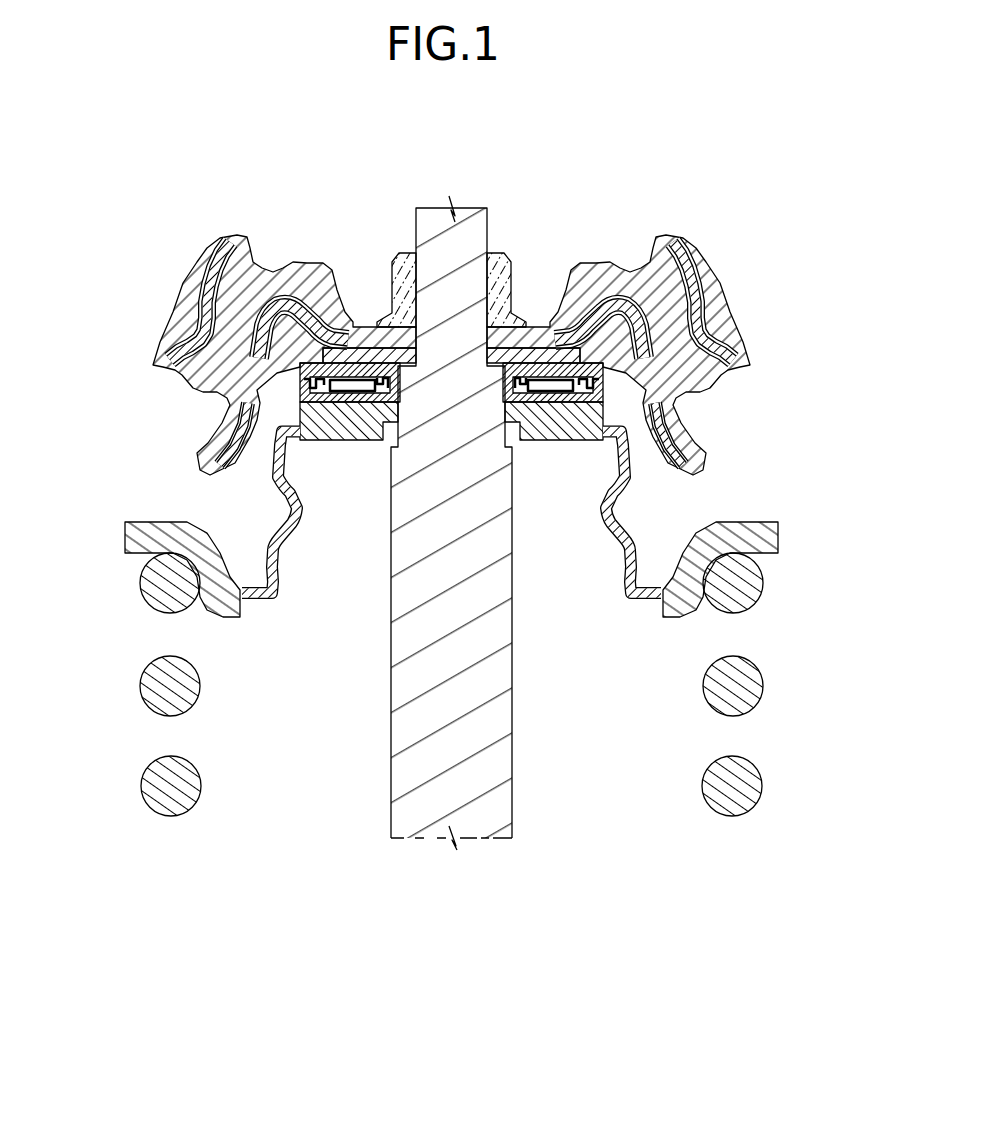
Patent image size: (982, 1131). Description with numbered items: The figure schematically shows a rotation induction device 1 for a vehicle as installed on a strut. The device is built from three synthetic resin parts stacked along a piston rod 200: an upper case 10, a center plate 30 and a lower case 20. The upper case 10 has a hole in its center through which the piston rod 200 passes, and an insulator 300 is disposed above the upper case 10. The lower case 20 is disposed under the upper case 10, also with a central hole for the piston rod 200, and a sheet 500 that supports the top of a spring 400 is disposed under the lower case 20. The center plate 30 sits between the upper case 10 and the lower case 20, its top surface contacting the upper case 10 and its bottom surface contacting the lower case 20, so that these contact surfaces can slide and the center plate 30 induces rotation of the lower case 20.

The rotation induction device 1 is at (585, 390).
The upper case 10 is at (580, 350).
The lower case 20 is at (583, 420).
The center plate 30 is at (603, 402).
The piston rod 200 is at (417, 808).
The insulator 300 is at (713, 295).
The spring 400 is at (142, 786).
The sheet 500 is at (125, 540).